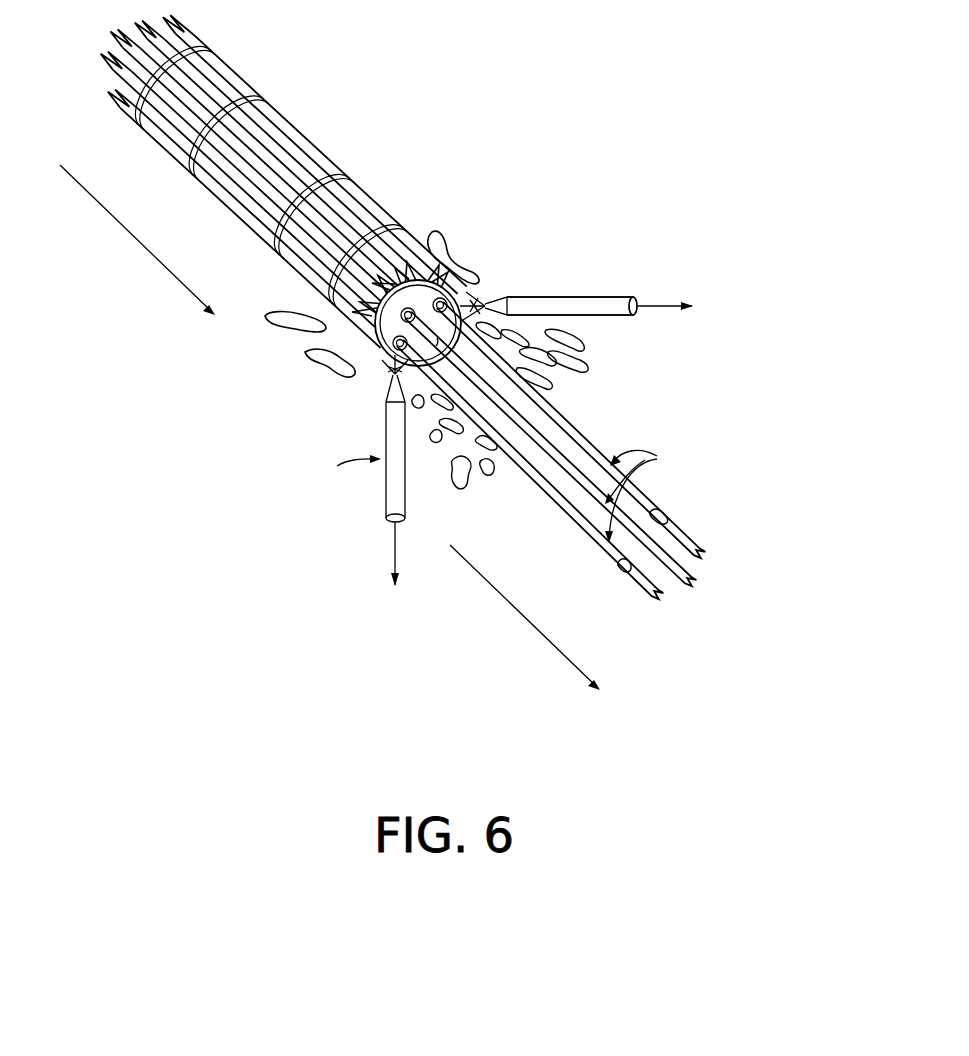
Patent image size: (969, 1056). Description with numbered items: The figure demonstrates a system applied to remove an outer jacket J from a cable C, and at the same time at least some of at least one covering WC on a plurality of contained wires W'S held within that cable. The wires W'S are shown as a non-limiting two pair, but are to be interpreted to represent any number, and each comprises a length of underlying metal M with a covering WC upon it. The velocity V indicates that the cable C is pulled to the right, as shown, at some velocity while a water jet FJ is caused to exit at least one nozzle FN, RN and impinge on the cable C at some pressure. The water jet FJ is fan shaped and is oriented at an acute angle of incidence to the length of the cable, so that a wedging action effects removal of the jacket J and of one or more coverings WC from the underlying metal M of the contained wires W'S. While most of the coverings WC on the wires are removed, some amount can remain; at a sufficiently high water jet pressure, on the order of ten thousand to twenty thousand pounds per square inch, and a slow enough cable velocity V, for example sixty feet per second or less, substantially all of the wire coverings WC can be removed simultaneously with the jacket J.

The outer jacket J is at (262, 169).
The cable C is at (584, 176).
The water jet FJ is at (380, 376).
The nozzle FN is at (565, 285).
The nozzle RN is at (589, 284).
The covering WC is at (576, 383).
The wires W'S is at (551, 450).
The metal M is at (638, 494).
The velocity V is at (330, 427).